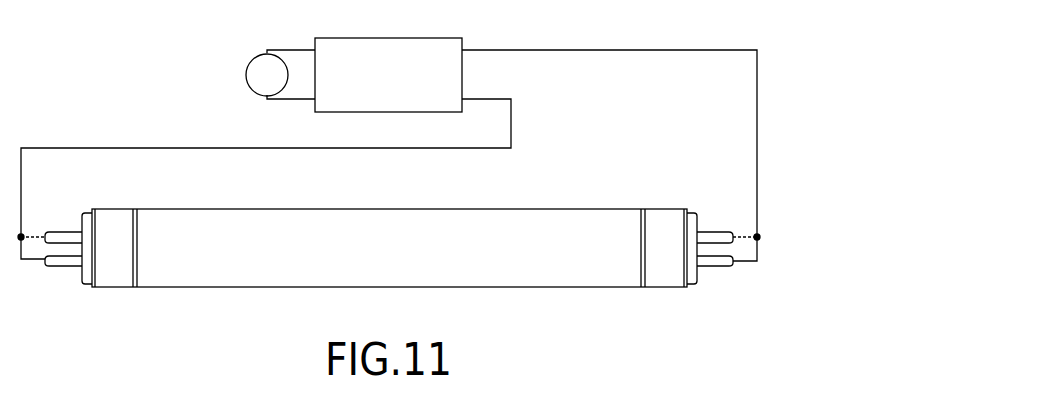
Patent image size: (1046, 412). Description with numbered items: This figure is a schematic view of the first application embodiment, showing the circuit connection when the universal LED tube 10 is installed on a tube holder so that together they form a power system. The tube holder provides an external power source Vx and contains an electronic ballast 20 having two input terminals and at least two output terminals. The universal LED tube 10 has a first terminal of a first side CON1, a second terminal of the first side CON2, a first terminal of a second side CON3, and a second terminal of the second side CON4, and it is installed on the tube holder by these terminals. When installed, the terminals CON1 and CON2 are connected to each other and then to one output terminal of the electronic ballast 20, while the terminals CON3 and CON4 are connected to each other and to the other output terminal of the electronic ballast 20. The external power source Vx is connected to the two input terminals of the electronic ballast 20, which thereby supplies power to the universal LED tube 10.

The universal LED tube 10 is at (389, 234).
The electronic ballast 20 is at (388, 43).
The external power source Vx is at (267, 75).
The first terminal of a first side CON1 is at (59, 226).
The second terminal of the first side CON2 is at (59, 273).
The first terminal of a second side CON3 is at (719, 226).
The second terminal of the second side CON4 is at (719, 273).